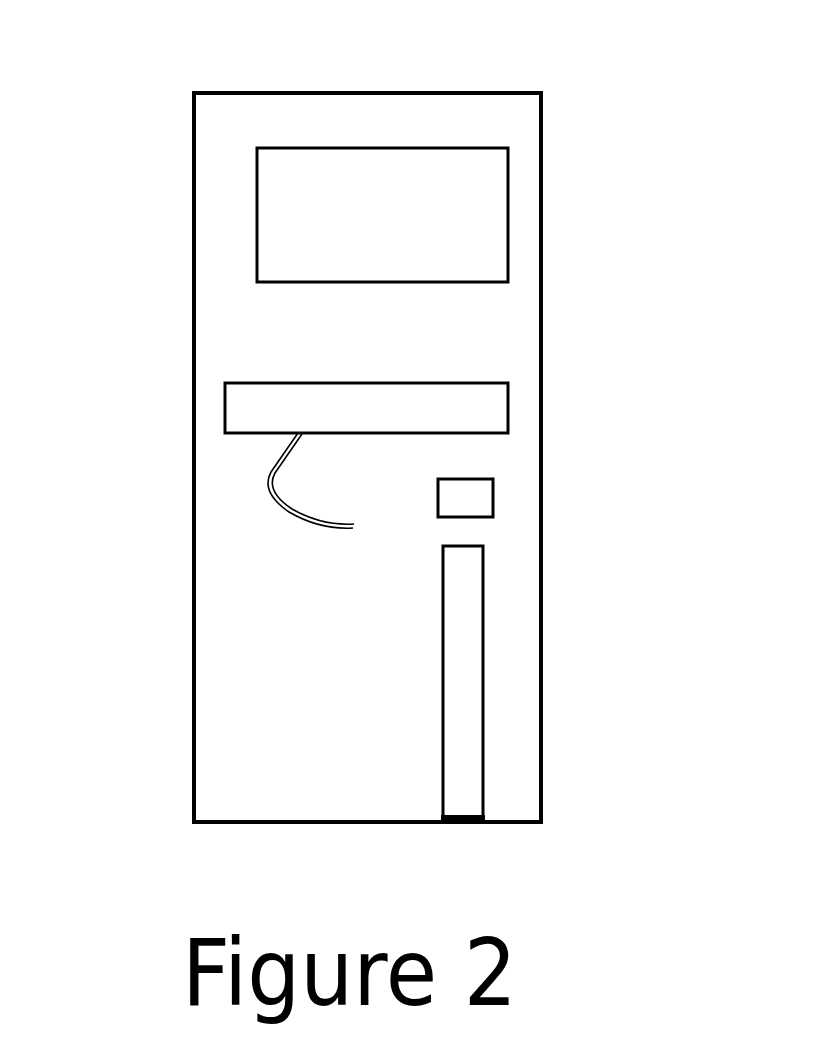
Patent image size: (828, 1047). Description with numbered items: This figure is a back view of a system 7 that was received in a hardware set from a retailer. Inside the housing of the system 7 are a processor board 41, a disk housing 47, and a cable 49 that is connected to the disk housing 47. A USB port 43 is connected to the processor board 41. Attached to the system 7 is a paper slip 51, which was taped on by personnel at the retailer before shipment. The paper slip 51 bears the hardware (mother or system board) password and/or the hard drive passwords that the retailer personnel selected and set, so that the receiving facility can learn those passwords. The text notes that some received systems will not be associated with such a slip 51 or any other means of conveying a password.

The system 7 is at (258, 92).
The paper slip 51 is at (257, 183).
The disk housing 47 is at (290, 383).
The cable 49 is at (268, 478).
The USB port 43 is at (493, 499).
The processor board 41 is at (483, 646).